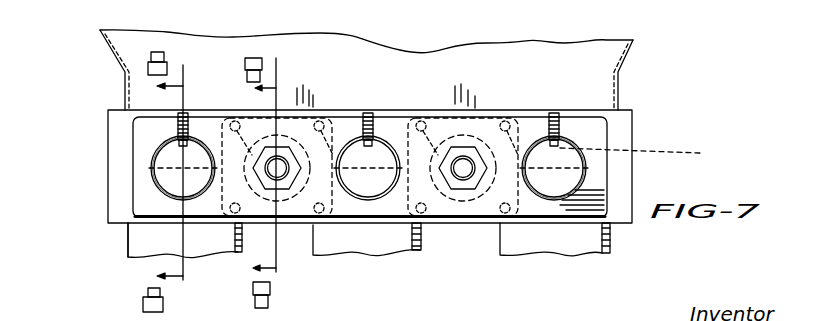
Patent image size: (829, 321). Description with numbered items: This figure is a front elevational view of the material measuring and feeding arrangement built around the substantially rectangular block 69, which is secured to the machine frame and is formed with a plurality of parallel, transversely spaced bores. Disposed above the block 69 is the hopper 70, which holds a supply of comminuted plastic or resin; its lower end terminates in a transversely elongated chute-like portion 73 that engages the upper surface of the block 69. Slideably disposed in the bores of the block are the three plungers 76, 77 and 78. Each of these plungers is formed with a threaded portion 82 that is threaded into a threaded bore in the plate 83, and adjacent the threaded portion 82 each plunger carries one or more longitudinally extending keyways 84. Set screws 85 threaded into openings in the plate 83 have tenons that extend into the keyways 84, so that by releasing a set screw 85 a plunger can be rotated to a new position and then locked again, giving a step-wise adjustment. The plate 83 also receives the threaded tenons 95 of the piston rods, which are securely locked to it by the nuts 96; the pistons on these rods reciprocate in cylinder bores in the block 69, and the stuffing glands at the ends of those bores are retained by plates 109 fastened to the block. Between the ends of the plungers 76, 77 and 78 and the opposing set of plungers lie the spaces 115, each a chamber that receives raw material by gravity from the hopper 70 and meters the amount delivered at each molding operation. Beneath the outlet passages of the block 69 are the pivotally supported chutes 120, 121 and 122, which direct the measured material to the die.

The block 69 is at (628, 138).
The hopper 70 is at (618, 43).
The chute-like portion 73 is at (620, 92).
The plunger 76 is at (160, 145).
The plunger 77 is at (382, 138).
The plunger 78 is at (577, 145).
The threaded portion 82 is at (162, 162).
The plate 83 is at (138, 190).
The keyway 84 is at (182, 137).
The set screw 85 is at (185, 114).
The threaded tenon 95 is at (288, 179).
The nut 96 is at (262, 180).
The plate 109 is at (418, 223).
The space 115 is at (649, 156).
The chute 120 is at (606, 235).
The chute 121 is at (403, 250).
The chute 122 is at (203, 250).